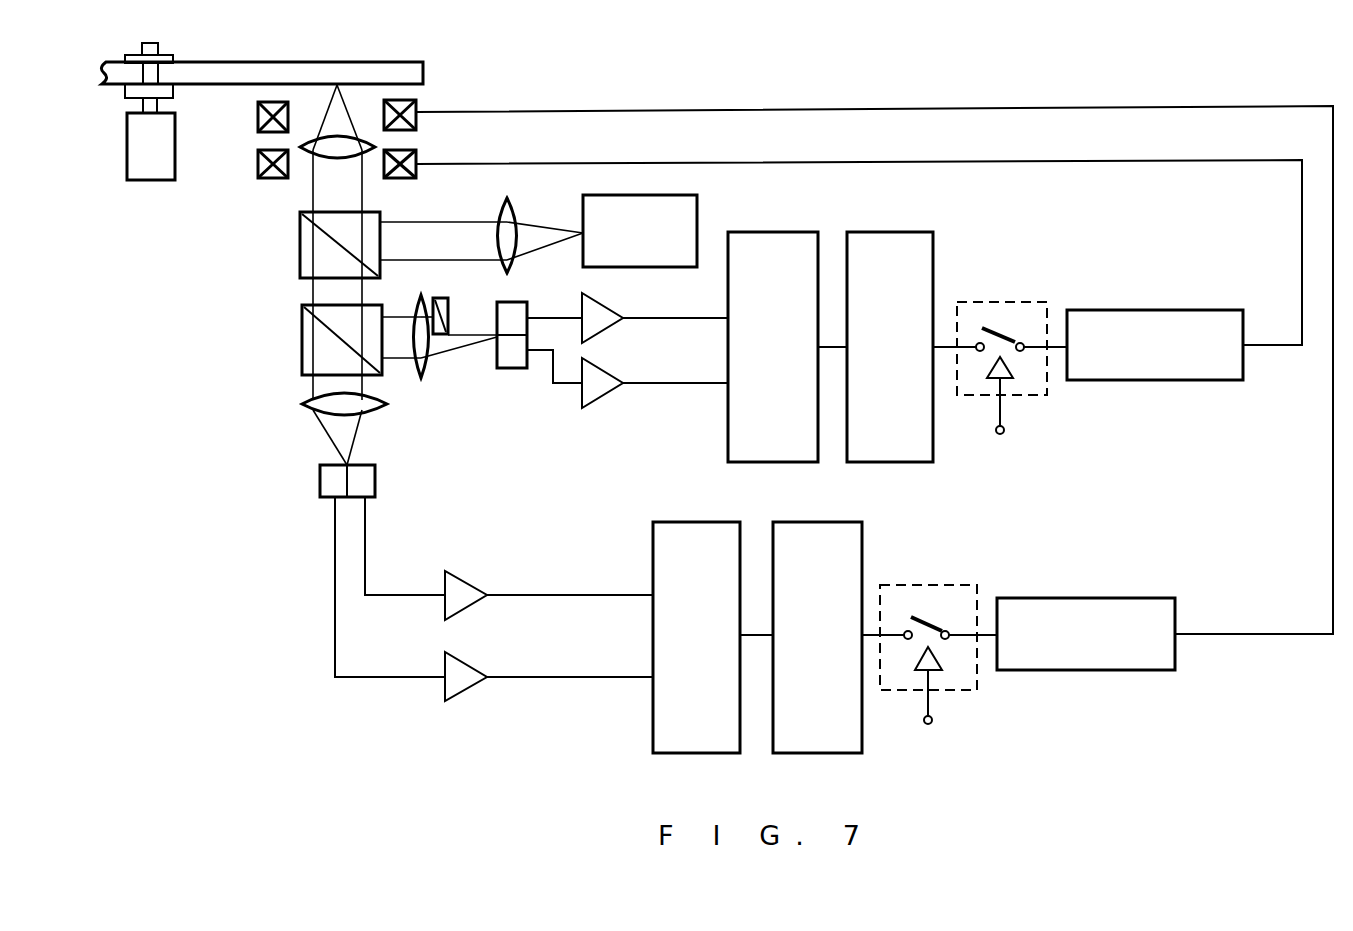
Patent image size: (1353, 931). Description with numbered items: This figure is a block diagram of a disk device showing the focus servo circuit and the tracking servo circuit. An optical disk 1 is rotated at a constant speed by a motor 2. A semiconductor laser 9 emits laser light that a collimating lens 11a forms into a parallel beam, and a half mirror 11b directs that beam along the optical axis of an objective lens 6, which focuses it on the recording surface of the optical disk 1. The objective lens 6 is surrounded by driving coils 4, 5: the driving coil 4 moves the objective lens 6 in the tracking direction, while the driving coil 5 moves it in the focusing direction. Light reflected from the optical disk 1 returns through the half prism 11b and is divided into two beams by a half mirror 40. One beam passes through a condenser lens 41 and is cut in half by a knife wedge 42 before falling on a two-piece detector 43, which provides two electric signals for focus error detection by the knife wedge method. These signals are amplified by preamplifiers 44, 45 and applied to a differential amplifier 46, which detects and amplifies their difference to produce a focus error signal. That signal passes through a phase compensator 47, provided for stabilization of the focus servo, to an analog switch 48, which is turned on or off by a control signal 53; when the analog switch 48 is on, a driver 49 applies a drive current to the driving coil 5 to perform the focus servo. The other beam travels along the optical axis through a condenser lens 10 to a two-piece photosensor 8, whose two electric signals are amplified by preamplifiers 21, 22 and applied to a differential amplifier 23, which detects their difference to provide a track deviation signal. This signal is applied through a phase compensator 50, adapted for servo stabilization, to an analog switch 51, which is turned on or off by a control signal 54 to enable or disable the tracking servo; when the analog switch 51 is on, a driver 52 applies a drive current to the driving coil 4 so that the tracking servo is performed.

The optical disk 1 is at (253, 61).
The motor 2 is at (170, 182).
The driving coil 4 is at (418, 107).
The driving coil 5 is at (420, 162).
The objective lens 6 is at (301, 150).
The photosensor 8 is at (320, 487).
The semiconductor laser 9 is at (699, 213).
The condenser lens 10 is at (306, 409).
The collimating lens 11a is at (509, 213).
The half mirror 11b is at (298, 258).
The preamplifier 21 is at (458, 572).
The preamplifier 22 is at (456, 699).
The differential amplifier 23 is at (676, 522).
The half mirror 40 is at (300, 344).
The condenser lens 41 is at (426, 366).
The knife wedge 42 is at (450, 312).
The two-piece detector 43 is at (512, 369).
The preamplifier 44 is at (610, 306).
The preamplifier 45 is at (610, 401).
The differential amplifier 46 is at (800, 232).
The phase compensator 47 is at (910, 232).
The analog switch 48 is at (1005, 300).
The driver 49 is at (1215, 310).
The phase compensator 50 is at (828, 522).
The analog switch 51 is at (930, 585).
The driver 52 is at (1143, 598).
The control signal 53 is at (1005, 432).
The control signal 54 is at (933, 721).